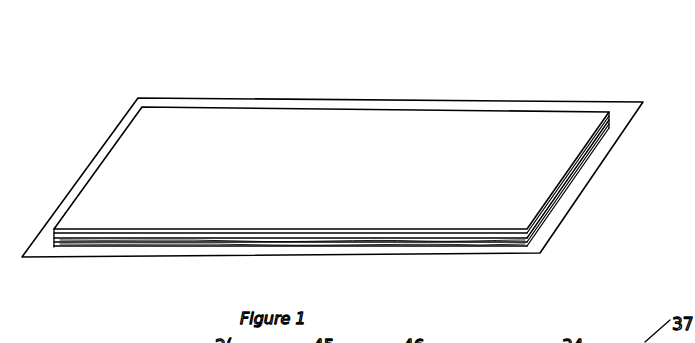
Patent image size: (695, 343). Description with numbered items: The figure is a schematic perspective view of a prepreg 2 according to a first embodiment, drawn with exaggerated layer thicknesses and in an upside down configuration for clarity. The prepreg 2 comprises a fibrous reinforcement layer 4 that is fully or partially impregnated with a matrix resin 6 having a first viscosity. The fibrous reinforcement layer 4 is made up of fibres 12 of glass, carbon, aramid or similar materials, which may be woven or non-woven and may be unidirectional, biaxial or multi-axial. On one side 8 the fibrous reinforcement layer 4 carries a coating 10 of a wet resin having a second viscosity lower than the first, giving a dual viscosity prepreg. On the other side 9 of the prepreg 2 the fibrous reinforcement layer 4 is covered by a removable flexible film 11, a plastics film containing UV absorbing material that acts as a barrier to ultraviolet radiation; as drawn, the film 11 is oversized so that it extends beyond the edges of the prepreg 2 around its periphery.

The prepreg 2 is at (350, 180).
The fibrous reinforcement layer 4 is at (432, 245).
The matrix resin 6 is at (393, 240).
The one side 8 is at (597, 153).
The other side 9 is at (597, 152).
The coating 10 is at (475, 132).
The removable flexible film 11 is at (555, 225).
The fibres 12 is at (170, 245).